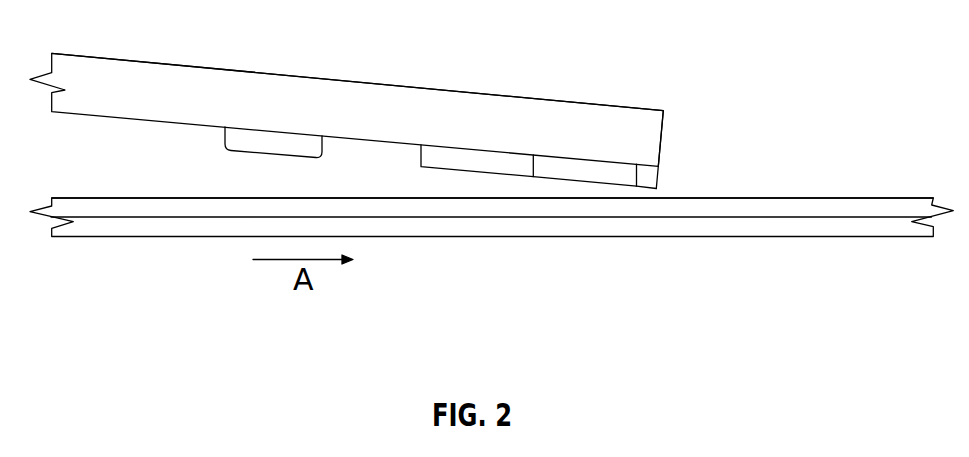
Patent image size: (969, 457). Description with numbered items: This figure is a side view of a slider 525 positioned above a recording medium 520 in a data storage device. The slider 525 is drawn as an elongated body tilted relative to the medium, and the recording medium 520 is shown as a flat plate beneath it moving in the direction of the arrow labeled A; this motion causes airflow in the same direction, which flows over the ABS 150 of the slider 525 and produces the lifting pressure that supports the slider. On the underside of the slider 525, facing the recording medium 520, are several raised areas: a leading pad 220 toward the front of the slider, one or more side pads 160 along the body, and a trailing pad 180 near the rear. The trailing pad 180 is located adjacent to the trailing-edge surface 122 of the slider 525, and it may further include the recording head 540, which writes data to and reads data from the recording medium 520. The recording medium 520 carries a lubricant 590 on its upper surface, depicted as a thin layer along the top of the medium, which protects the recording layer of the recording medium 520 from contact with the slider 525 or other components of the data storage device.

The ABS 150 is at (108, 135).
The slider 525 is at (343, 82).
The trailing-edge surface 122 is at (680, 130).
The leading pad 220 is at (249, 148).
The side pad 160 is at (421, 168).
The trailing pad 180 is at (570, 172).
The recording head 540 is at (652, 166).
The recording medium 520 is at (153, 238).
The lubricant 590 is at (865, 198).